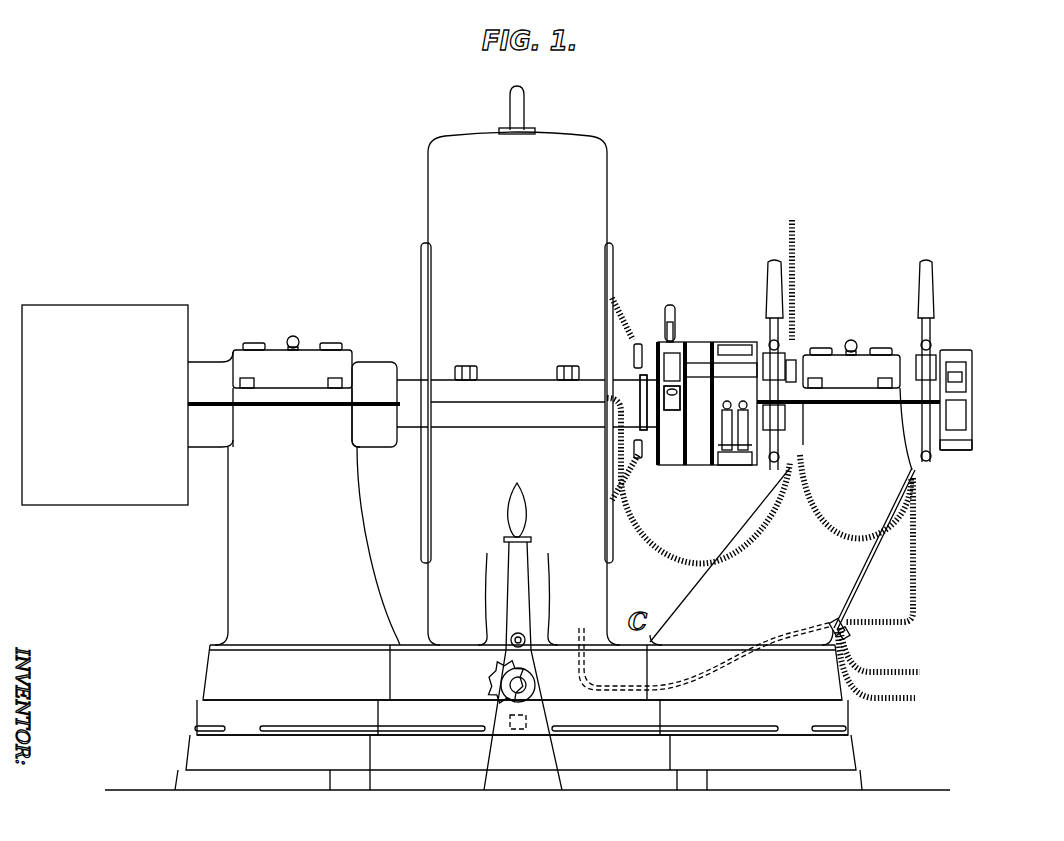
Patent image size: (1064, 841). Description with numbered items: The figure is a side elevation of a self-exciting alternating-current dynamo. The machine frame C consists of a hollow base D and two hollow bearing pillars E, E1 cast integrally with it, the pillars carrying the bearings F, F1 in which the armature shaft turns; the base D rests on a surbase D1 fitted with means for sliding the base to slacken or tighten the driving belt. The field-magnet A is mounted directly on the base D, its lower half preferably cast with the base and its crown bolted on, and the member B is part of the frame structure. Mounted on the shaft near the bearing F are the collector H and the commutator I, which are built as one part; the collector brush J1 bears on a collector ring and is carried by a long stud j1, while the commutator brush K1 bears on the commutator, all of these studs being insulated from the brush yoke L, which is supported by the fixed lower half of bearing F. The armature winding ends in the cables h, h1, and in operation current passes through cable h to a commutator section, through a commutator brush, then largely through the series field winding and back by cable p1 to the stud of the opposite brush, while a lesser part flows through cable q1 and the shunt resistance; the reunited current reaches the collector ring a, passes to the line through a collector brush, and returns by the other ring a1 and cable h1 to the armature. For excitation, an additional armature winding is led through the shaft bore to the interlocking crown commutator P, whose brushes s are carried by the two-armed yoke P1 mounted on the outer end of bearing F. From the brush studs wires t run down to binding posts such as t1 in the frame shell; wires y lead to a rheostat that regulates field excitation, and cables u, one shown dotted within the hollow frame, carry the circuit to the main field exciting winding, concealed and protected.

The field-magnet A is at (474, 148).
The frame B is at (424, 284).
The frame C is at (405, 380).
The base D is at (521, 690).
The surbase D1 is at (539, 762).
The bearing pillar E is at (781, 516).
The bearing pillar E1 is at (294, 498).
The bearing F is at (848, 375).
The bearing F1 is at (272, 350).
The collector H is at (685, 423).
The commutator I is at (766, 365).
The collector brush J1 is at (662, 345).
The stud j1 is at (700, 362).
The commutator brush K1 is at (740, 458).
The brush yoke L is at (800, 400).
The interlocking crown commutator P is at (972, 357).
The brush yoke P1 is at (938, 455).
The commutator brush s is at (968, 380).
The collector ring a is at (673, 417).
The collector ring a1 is at (674, 423).
The cable h is at (620, 320).
The cable h1 is at (645, 480).
The cable p1 is at (712, 528).
The cable q1 is at (868, 534).
The conducting wire t is at (918, 555).
The binding post t1 is at (850, 636).
The cable u is at (705, 650).
The wire y is at (886, 663).